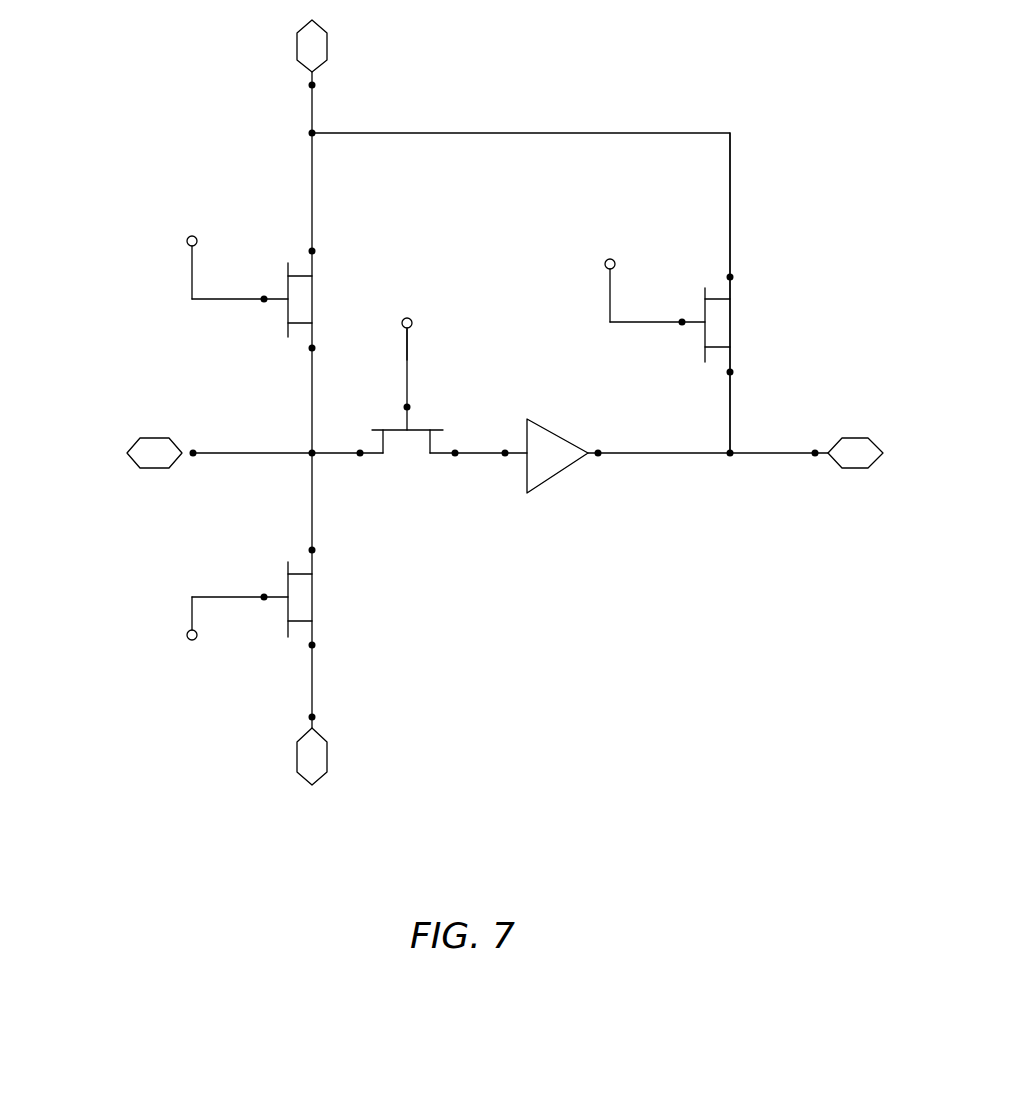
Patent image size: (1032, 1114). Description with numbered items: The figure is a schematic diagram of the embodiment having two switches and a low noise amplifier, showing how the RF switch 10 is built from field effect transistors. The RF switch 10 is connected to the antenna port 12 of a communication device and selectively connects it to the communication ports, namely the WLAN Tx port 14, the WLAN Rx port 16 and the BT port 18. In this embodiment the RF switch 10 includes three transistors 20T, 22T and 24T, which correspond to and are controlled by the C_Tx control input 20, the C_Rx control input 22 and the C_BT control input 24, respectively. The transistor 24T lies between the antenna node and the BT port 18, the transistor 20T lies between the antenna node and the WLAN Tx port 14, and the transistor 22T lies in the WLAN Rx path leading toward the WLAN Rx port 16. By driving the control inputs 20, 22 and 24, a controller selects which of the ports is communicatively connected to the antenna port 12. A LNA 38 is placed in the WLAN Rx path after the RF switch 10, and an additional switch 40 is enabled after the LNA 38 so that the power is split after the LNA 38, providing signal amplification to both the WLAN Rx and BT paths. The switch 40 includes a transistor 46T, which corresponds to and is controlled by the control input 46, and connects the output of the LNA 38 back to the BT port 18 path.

The RF switch 10 is at (263, 408).
The antenna port 12 is at (150, 468).
The WLAN transmit (Tx) port 14 is at (323, 740).
The WLAN receive (Rx) port 16 is at (862, 440).
The BT port 18 is at (322, 30).
The C_Tx control input 20 is at (230, 597).
The transistor 20T is at (288, 612).
The C_Rx control input 22 is at (407, 368).
The transistor 22T is at (426, 430).
The C_BT control input 24 is at (192, 272).
The transistor 24T is at (288, 308).
The LNA 38 is at (555, 475).
The switch 40 is at (690, 293).
The control input 46 is at (610, 288).
The transistor 46T is at (705, 337).